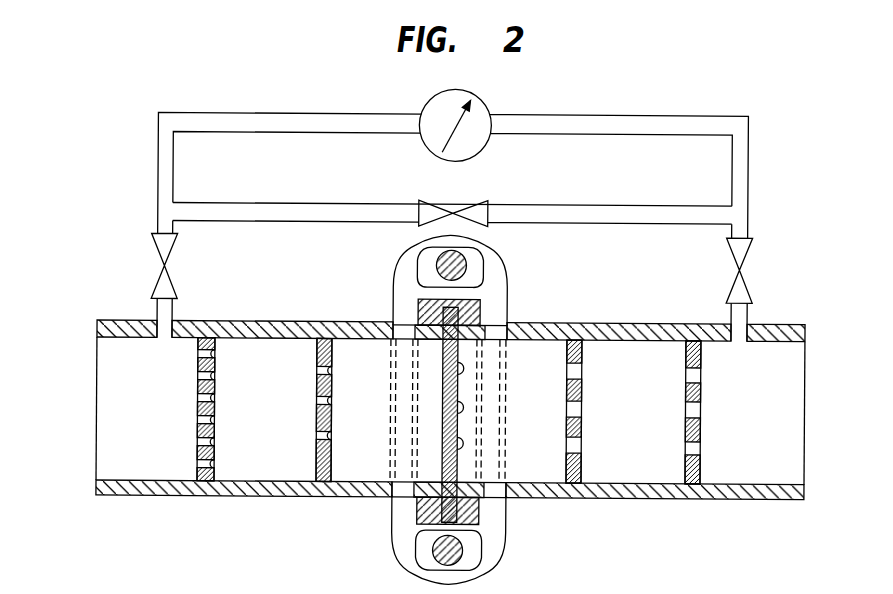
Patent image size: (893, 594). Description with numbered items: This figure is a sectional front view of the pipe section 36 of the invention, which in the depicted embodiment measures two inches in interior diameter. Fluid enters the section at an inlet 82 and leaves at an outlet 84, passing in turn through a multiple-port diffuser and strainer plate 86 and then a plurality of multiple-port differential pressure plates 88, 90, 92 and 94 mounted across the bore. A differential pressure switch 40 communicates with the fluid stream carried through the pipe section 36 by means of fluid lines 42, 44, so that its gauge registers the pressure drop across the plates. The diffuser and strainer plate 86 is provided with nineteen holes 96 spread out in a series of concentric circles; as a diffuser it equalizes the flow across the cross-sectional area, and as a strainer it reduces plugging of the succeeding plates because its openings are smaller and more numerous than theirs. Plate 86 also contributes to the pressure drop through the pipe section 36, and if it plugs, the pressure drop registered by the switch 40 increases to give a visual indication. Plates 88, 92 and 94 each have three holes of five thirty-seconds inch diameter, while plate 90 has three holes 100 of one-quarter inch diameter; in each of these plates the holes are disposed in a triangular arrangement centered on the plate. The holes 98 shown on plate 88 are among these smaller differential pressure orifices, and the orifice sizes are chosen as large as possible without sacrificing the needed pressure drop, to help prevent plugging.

The pipe section 36 is at (197, 496).
The differential pressure switch 40 is at (490, 98).
The fluid line 42 is at (157, 176).
The fluid line 44 is at (747, 189).
The inlet 82 is at (96, 410).
The outlet 84 is at (805, 425).
The multiple-port diffuser and strainer plate 86 is at (215, 477).
The multiple-port differential pressure plate 88 is at (332, 470).
The multiple-port differential pressure plate 90 is at (458, 465).
The multiple-port differential pressure plate 92 is at (582, 470).
The multiple-port differential pressure plate 94 is at (701, 466).
The holes 96 is at (215, 463).
The perforations in second plate 98 is at (332, 434).
The holes 100 is at (458, 441).